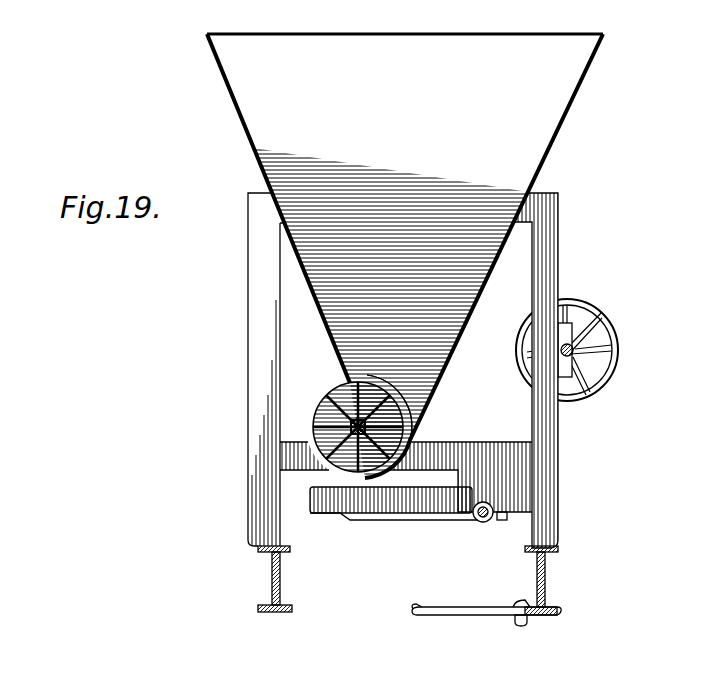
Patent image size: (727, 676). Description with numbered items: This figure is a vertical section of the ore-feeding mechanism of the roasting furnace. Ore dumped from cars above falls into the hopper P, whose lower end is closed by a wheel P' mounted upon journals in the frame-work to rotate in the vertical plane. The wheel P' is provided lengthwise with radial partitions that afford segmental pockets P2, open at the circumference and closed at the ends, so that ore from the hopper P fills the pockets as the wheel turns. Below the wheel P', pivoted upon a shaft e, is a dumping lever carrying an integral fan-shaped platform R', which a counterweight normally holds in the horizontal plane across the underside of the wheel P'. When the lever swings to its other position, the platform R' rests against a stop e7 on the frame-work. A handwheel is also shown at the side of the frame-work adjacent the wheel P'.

The hopper P is at (405, 256).
The wheel P' is at (345, 421).
The segmental pockets P2 is at (397, 424).
The fan-shaped platform R' is at (396, 523).
The shaft e is at (483, 522).
The stop e7 is at (470, 600).
The hand wheel handwheel is at (567, 350).